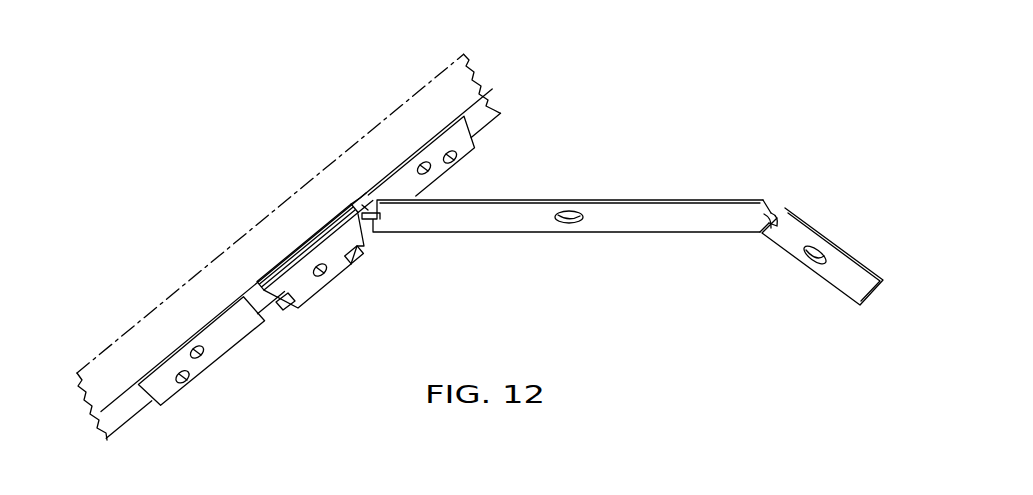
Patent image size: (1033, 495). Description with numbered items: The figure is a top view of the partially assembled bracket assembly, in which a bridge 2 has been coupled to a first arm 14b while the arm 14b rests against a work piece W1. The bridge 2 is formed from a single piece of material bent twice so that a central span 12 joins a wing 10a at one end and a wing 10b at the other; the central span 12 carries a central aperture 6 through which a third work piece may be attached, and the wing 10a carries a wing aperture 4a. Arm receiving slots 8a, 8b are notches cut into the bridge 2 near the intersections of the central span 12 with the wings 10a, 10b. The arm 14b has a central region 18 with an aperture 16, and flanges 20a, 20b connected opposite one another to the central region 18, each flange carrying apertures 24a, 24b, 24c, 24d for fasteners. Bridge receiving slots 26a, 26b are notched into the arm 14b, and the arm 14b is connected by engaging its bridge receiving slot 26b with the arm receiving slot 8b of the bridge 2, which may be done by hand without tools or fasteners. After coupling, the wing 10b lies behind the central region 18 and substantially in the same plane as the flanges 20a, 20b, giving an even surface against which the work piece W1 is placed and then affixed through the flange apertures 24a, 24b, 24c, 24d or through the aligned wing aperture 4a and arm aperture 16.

The bridge 2 is at (642, 186).
The wing aperture 4a is at (812, 259).
The central aperture 6 is at (569, 224).
The arm receiving slot 8a is at (775, 212).
The arm receiving slot 8b is at (362, 196).
The wing 10a is at (833, 240).
The wing 10b is at (280, 262).
The central span 12 is at (684, 218).
The arm 14b is at (212, 311).
The aperture 16 is at (330, 274).
The central region 18 is at (346, 263).
The flange 20a is at (435, 146).
The flange 20b is at (165, 403).
The aperture 24a is at (457, 160).
The aperture 24b is at (430, 172).
The aperture 24c is at (200, 358).
The aperture 24d is at (185, 381).
The bridge receiving slot 26a is at (358, 244).
The bridge receiving slot 26b is at (287, 303).
The work piece W1 is at (281, 199).